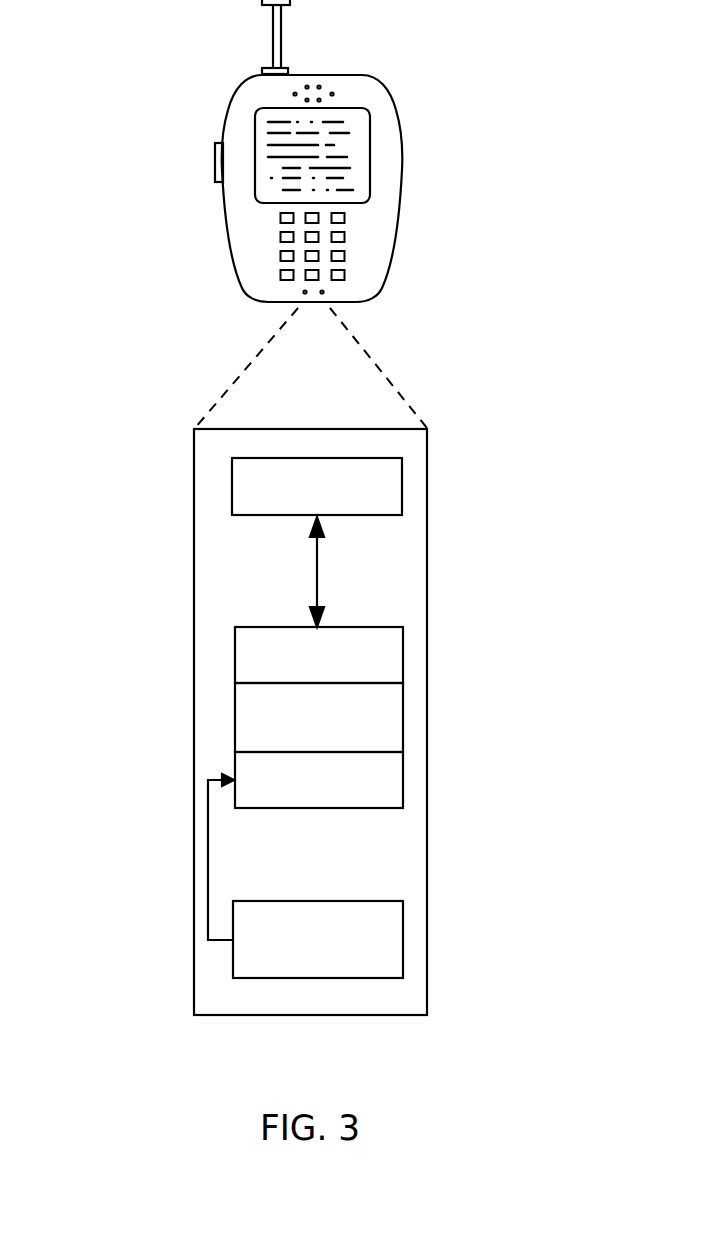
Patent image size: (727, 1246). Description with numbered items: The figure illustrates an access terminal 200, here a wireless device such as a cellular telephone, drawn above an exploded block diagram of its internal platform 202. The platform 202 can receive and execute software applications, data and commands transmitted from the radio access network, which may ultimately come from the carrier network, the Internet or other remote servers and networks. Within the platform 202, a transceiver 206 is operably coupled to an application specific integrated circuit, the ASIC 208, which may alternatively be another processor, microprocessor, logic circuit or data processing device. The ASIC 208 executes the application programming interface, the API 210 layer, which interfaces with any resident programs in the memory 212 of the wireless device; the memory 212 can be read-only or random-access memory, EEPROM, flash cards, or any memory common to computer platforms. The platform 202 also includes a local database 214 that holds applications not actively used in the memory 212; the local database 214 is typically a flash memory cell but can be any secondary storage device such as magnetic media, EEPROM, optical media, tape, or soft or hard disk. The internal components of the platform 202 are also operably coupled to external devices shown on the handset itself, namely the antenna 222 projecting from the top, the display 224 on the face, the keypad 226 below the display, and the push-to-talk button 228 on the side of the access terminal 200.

The access terminal 200 is at (377, 283).
The platform 202 is at (194, 626).
The transceiver 206 is at (402, 489).
The application specific integrated circuit 208 is at (403, 663).
The application programming interface 210 is at (403, 712).
The memory 212 is at (403, 780).
The local database 214 is at (403, 923).
The antenna 222 is at (282, 17).
The display 224 is at (370, 142).
The keypad 226 is at (345, 237).
The push-to-talk button 228 is at (215, 152).